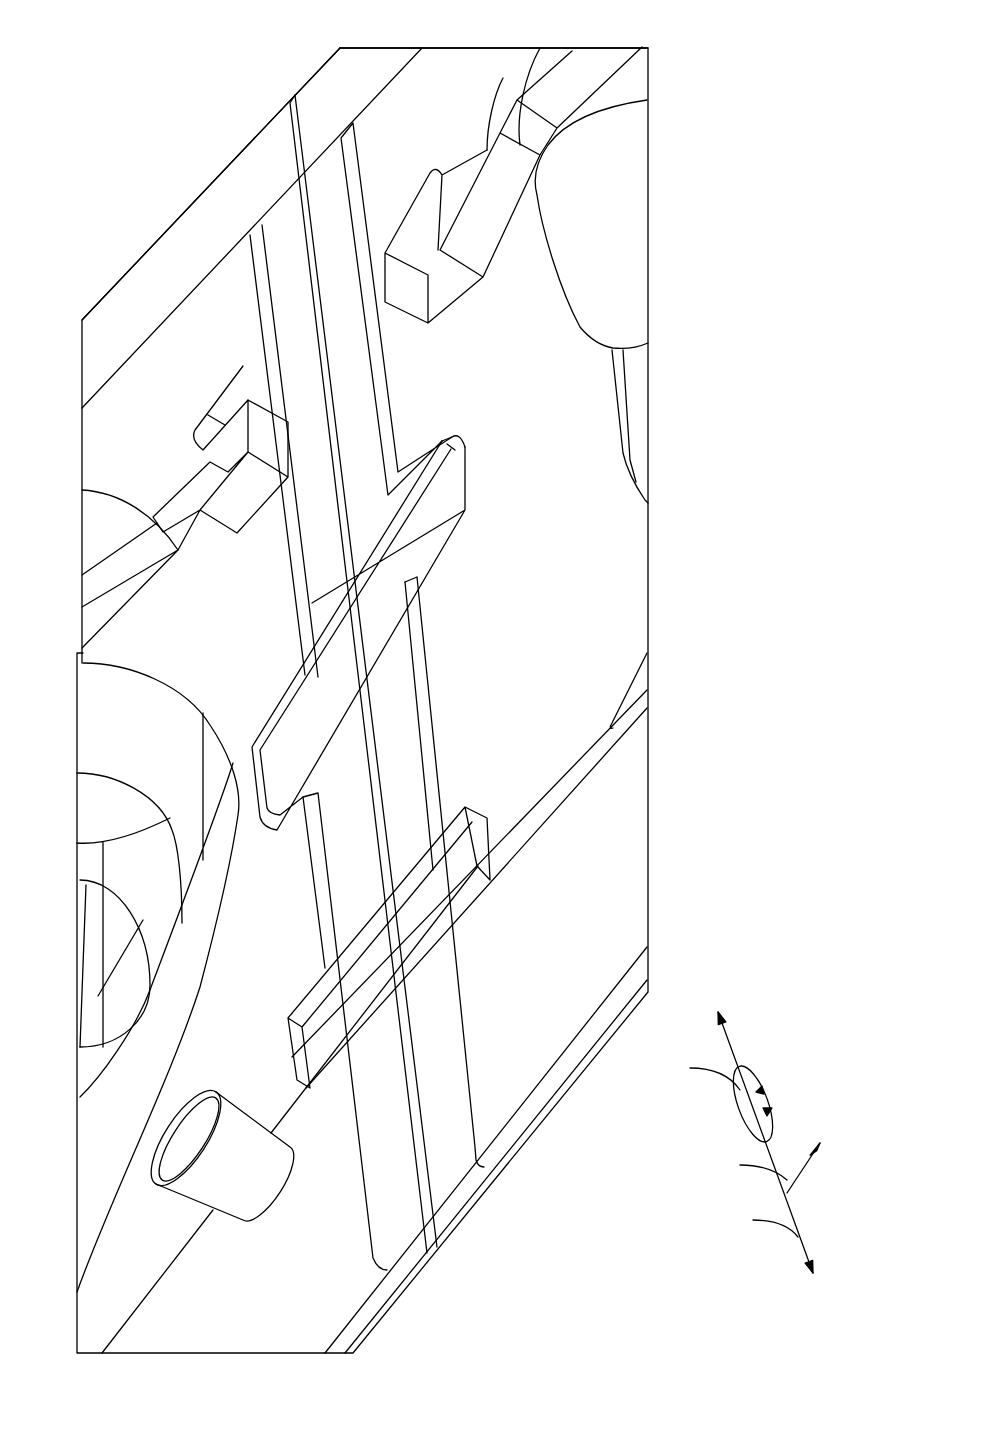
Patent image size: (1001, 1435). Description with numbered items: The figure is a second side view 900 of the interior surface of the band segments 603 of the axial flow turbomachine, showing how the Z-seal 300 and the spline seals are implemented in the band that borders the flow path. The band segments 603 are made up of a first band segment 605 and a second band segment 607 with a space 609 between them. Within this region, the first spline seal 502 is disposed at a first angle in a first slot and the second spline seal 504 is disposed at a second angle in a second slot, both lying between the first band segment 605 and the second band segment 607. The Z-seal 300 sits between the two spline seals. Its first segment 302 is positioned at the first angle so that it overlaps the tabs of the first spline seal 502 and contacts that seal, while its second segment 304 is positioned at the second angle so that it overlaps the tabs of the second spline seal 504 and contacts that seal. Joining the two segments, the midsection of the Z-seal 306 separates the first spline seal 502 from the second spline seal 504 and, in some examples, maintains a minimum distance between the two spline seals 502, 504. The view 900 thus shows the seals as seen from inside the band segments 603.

The Z-seal 300 is at (392, 588).
The first segment of the Z-seal 302 is at (466, 446).
The second segment of the Z-seal 304 is at (405, 627).
The midsection of the Z-seal 306 is at (305, 675).
The first spline seal 502 is at (373, 385).
The second spline seal 504 is at (415, 697).
The band segments 603 is at (170, 80).
The first band segment 605 is at (215, 180).
The second band segment 607 is at (387, 48).
The space 609 is at (335, 427).
The second side view 900 is at (748, 33).